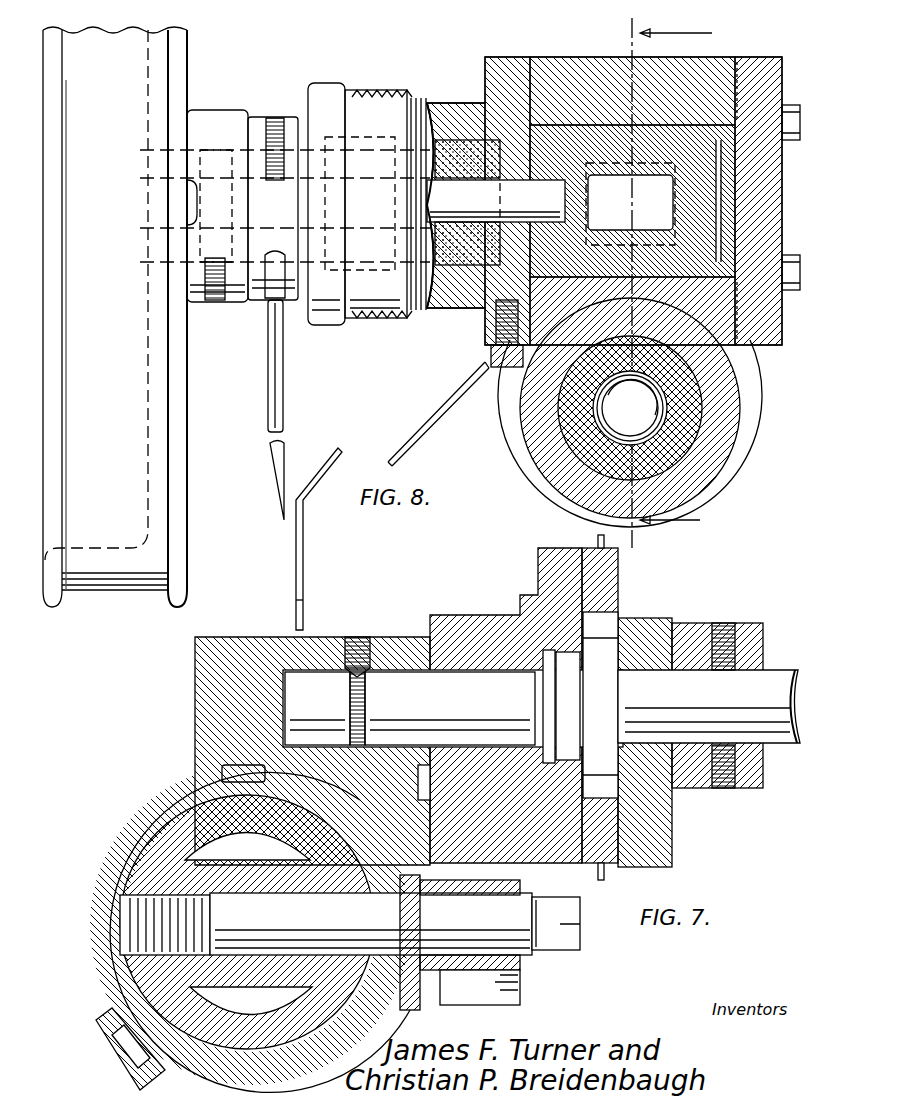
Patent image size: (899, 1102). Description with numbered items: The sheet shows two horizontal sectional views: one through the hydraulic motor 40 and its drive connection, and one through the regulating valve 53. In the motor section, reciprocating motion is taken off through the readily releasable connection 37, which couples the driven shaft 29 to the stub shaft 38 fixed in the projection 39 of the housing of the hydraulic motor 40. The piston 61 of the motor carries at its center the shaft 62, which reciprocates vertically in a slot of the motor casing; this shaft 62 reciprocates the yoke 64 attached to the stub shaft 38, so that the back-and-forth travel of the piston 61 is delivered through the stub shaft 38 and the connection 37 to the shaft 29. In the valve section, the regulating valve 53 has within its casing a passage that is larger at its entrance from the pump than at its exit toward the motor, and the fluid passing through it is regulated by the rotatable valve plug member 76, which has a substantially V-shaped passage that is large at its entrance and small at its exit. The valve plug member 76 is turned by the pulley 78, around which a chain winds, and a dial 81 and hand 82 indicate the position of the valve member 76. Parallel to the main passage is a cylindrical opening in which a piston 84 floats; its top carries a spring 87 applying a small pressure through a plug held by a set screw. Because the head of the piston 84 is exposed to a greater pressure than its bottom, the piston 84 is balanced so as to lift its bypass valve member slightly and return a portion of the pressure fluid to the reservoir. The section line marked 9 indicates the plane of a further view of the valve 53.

In FIG. 8, the pulley 78 is at (182, 78).
In FIG. 8, the regulating valve 53 is at (712, 62).
In FIG. 8, the rotatable valve plug member 76 is at (690, 162).
In FIG. 8, the section line 9 is at (686, 283).
In FIG. 8, the hand 82 is at (285, 375).
In FIG. 8, the dial 81 is at (440, 415).
In FIG. 8, the spring 87 is at (632, 397).
In FIG. 8, the piston 84 is at (680, 418).
In FIG. 7, the readily releasable connection 37 is at (605, 575).
In FIG. 7, the projection 39 is at (195, 690).
In FIG. 7, the stub shaft 38 is at (453, 692).
In FIG. 7, the shaft 29 is at (709, 706).
In FIG. 7, the piston 61 is at (150, 838).
In FIG. 7, the hydraulic motor 40 is at (110, 875).
In FIG. 7, the shaft 62 is at (350, 942).
In FIG. 7, the yoke 64 is at (520, 995).